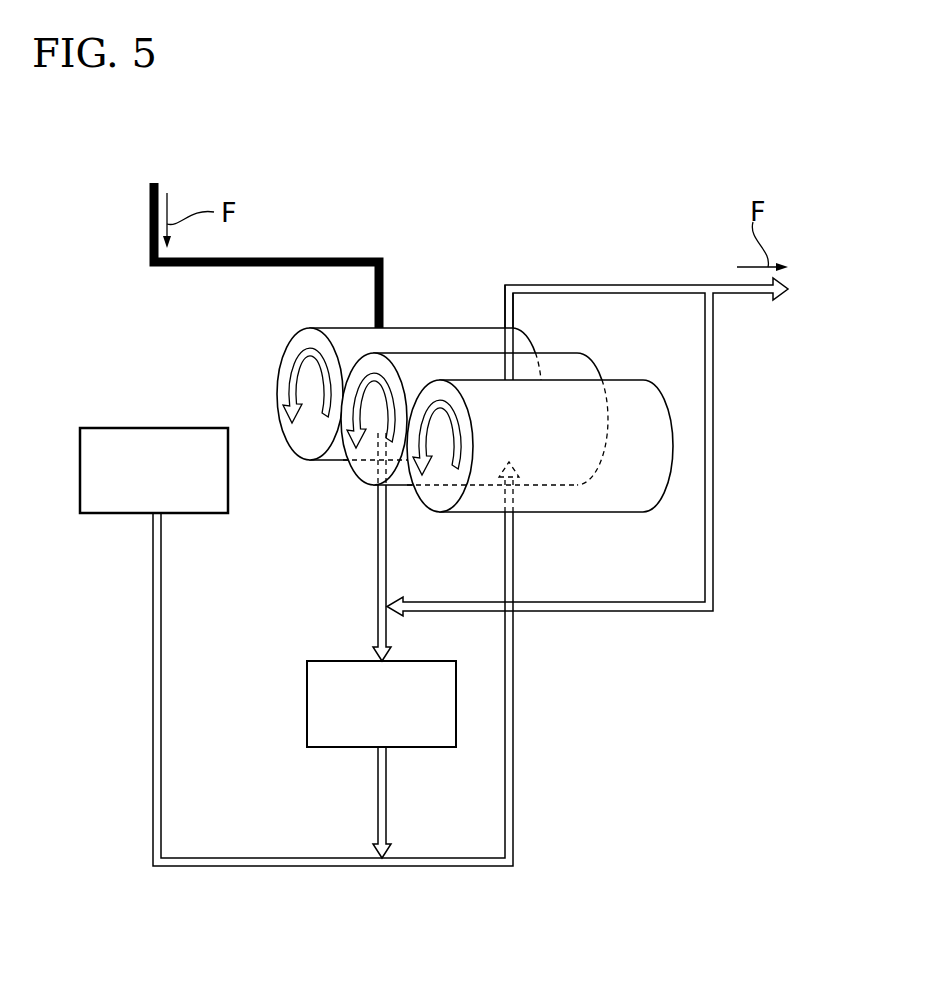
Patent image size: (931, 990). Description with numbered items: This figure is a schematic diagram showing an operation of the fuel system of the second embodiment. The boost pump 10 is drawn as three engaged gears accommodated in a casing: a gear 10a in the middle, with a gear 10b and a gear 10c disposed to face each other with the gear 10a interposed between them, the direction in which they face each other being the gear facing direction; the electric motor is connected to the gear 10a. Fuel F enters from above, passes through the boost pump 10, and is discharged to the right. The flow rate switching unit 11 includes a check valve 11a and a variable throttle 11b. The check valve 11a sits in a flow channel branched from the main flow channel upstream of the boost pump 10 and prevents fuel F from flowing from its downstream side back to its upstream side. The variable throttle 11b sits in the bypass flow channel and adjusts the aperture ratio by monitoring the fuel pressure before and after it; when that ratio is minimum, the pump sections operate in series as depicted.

The boost pump 10 is at (468, 382).
The gear 10a is at (350, 465).
The gear 10b is at (283, 443).
The gear 10c is at (413, 495).
The flow rate switching unit 11 is at (434, 609).
The check valve 11a is at (110, 513).
The variable throttle 11b is at (307, 727).